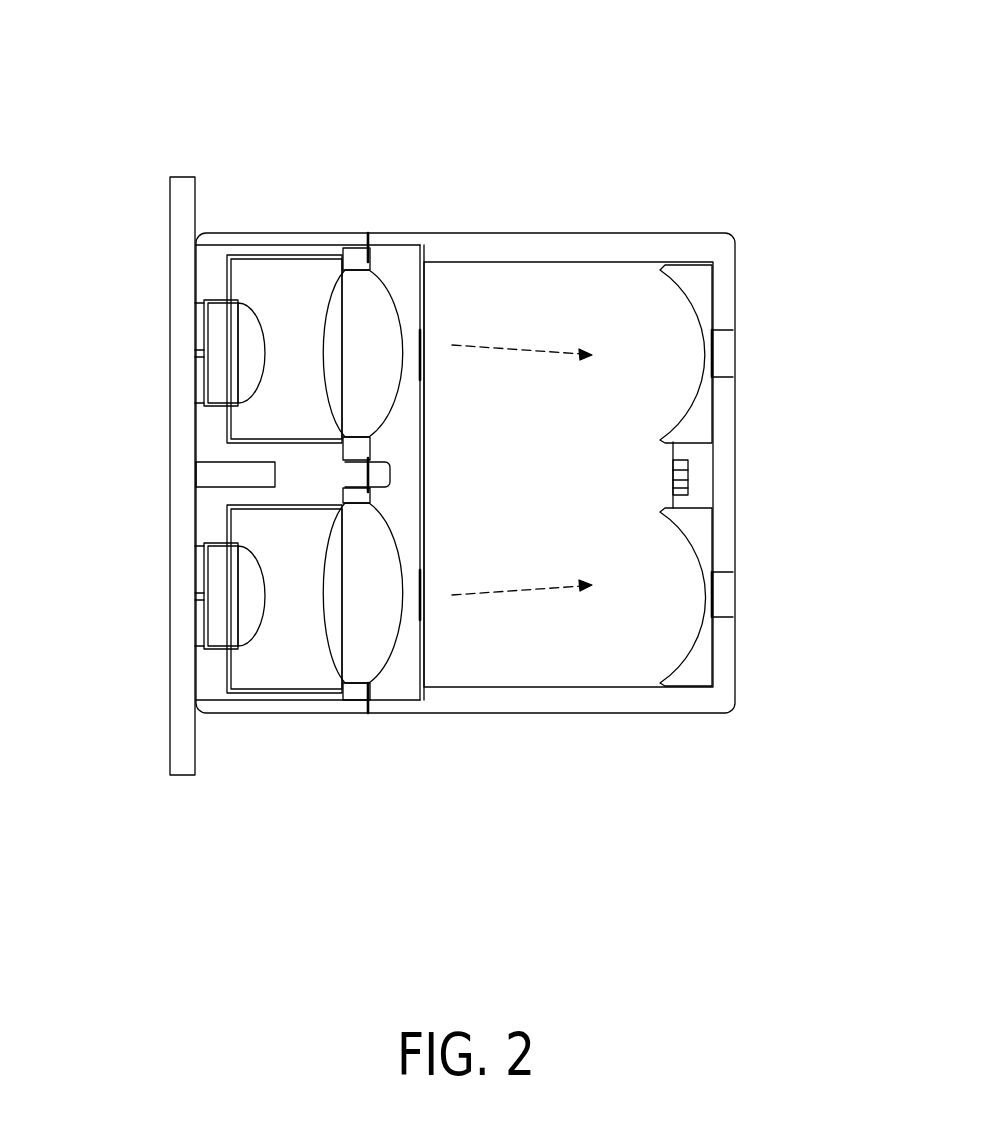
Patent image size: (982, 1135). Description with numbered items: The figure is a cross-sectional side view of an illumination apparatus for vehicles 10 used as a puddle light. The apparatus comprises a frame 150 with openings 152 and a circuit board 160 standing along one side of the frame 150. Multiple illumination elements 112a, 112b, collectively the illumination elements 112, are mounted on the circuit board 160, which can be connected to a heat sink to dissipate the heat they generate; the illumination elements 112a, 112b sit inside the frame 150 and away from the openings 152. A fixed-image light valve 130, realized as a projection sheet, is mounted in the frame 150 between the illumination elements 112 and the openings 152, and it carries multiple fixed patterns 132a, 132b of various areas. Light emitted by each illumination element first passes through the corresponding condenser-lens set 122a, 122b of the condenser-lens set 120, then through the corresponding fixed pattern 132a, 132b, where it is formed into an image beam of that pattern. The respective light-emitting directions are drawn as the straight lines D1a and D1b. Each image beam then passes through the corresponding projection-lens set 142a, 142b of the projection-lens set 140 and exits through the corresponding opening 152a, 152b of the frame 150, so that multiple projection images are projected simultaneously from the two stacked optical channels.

The illumination apparatus for vehicles 10 is at (103, 38).
The illumination elements 112 is at (172, 412).
The illumination element 112a is at (210, 302).
The illumination element 112b is at (208, 543).
The condenser-lens set 120 is at (340, 472).
The condenser-lens set 122a is at (355, 260).
The condenser-lens set 122b is at (372, 690).
The fixed-image light valve 130 is at (425, 685).
The fixed pattern 132a is at (423, 395).
The fixed pattern 132b is at (423, 590).
The projection-lens set 140 is at (651, 477).
The projection-lens set 142a is at (668, 265).
The projection-lens set 142b is at (660, 687).
The frame 150 is at (560, 234).
The openings 152 is at (786, 418).
The opening 152a is at (733, 352).
The opening 152b is at (733, 597).
The circuit board 160 is at (195, 178).
The light-emitting direction D1a is at (568, 350).
The light-emitting direction D1b is at (573, 582).